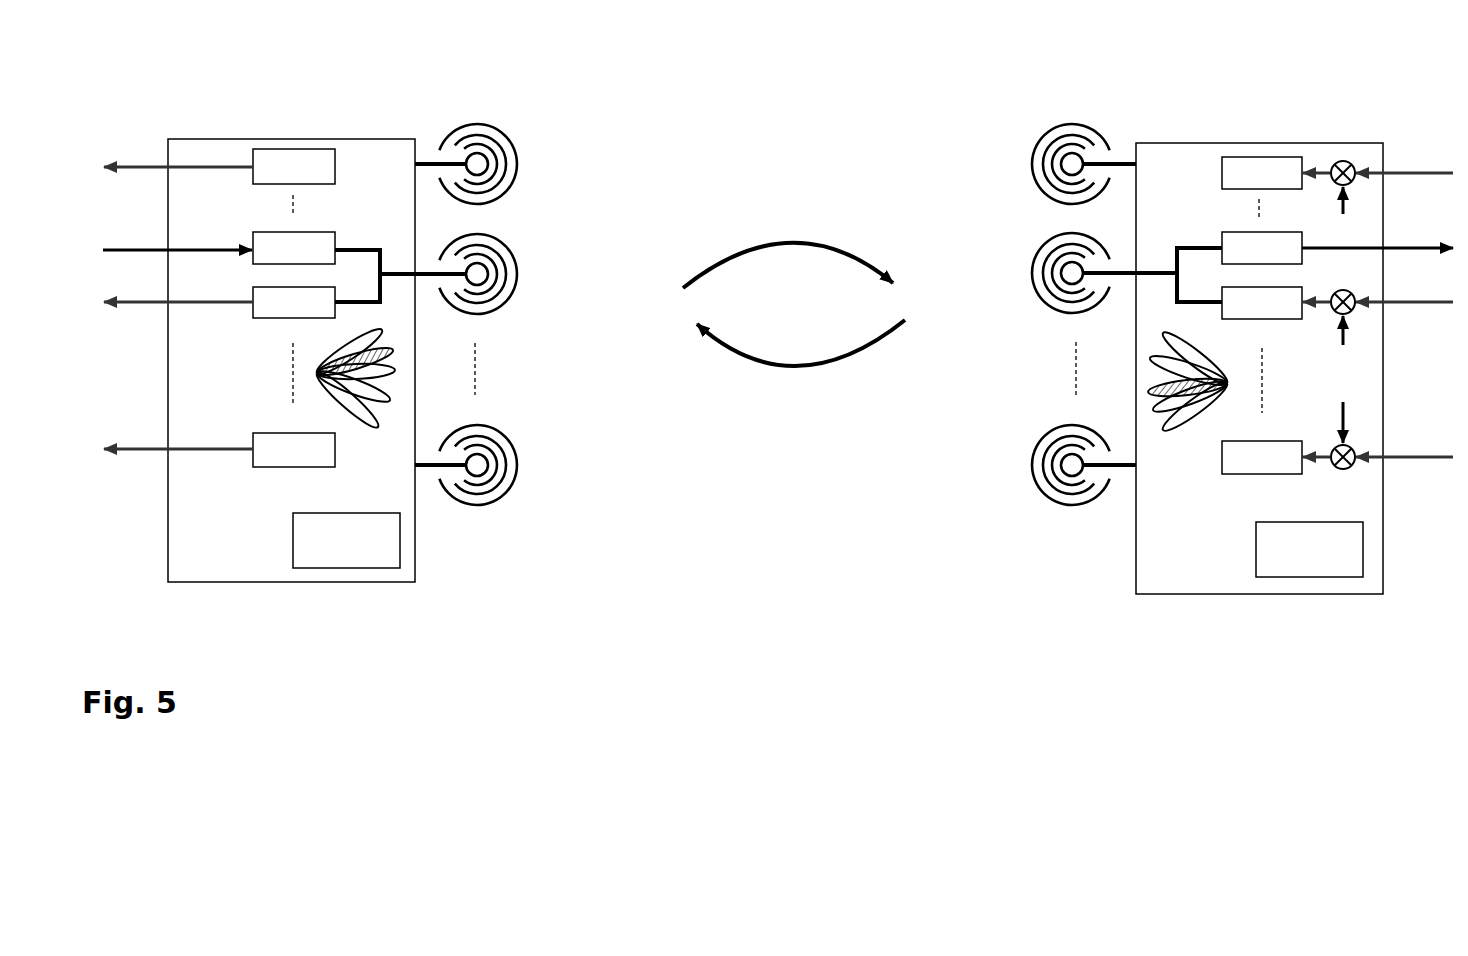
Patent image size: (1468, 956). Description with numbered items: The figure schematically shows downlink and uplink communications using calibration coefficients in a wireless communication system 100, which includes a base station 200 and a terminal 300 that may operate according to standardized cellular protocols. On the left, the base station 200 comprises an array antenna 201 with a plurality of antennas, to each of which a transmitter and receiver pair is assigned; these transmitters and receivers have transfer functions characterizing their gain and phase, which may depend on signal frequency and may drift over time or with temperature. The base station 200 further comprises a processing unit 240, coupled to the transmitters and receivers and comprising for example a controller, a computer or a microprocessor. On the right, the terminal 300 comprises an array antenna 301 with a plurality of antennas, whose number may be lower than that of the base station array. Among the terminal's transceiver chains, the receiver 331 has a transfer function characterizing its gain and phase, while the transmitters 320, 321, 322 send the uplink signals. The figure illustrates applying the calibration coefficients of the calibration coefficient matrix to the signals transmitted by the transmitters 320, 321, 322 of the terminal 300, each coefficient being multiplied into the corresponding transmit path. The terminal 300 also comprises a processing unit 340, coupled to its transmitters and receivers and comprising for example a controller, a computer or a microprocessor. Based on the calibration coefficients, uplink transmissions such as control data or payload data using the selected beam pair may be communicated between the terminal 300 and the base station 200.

The wireless communication system 100 is at (726, 76).
The base station 200 is at (288, 138).
The array antenna 201 is at (484, 108).
The processing unit 240 is at (293, 553).
The terminal 300 is at (1230, 143).
The array antenna 301 is at (1077, 109).
The transmitter 320 is at (1217, 173).
The transmitter 321 is at (1257, 320).
The transmitter 322 is at (1302, 474).
The receiver 331 is at (1218, 240).
The processing unit 340 is at (1256, 563).